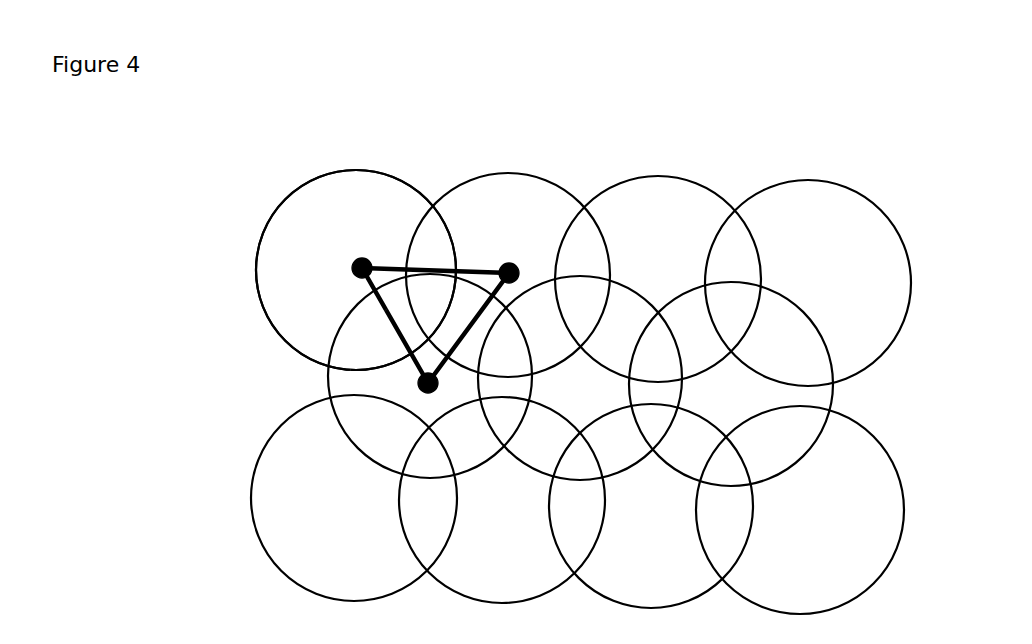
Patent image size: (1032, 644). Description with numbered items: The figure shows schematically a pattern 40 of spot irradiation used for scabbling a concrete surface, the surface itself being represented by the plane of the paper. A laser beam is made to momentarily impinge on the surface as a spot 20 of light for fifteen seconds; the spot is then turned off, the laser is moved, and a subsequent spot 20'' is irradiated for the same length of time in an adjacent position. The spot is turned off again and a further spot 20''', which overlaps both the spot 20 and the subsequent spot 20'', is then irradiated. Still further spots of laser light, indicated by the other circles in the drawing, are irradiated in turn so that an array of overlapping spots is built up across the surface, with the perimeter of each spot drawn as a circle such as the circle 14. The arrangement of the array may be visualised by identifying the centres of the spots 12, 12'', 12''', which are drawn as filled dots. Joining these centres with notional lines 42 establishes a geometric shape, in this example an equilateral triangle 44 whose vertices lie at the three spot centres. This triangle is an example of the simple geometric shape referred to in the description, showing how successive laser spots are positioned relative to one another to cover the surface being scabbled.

The centre of spot 12 is at (281, 252).
The centre of spot 12'' is at (586, 255).
The centre of spot 12''' is at (469, 447).
The well perimeter 14 is at (347, 168).
The spot 20 is at (314, 263).
The subsequent spot 20'' is at (508, 257).
The further spot 20''' is at (357, 376).
The pattern 40 is at (541, 354).
The notional lines 42 is at (397, 365).
The equilateral triangle 44 is at (487, 267).